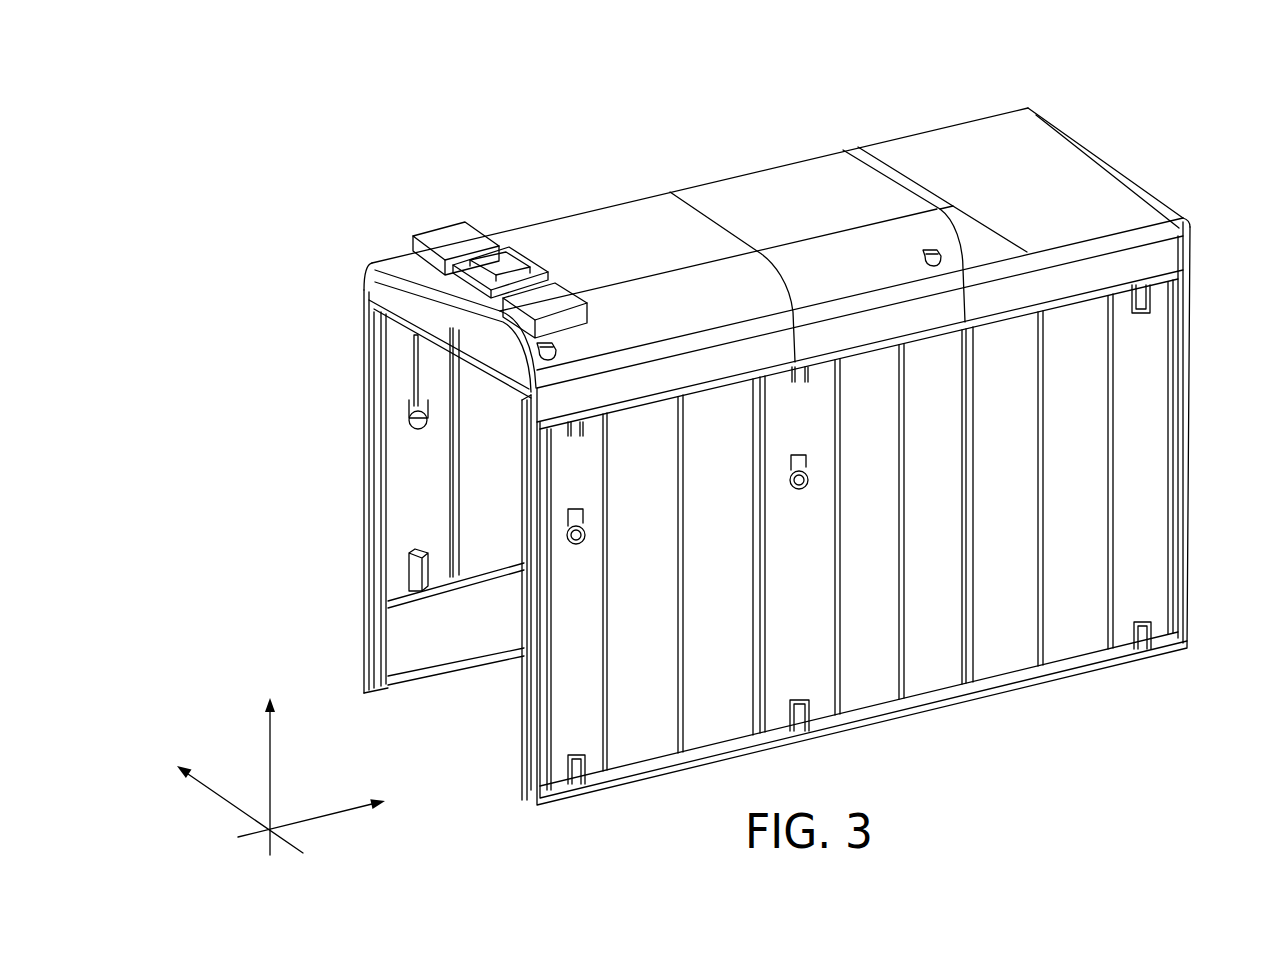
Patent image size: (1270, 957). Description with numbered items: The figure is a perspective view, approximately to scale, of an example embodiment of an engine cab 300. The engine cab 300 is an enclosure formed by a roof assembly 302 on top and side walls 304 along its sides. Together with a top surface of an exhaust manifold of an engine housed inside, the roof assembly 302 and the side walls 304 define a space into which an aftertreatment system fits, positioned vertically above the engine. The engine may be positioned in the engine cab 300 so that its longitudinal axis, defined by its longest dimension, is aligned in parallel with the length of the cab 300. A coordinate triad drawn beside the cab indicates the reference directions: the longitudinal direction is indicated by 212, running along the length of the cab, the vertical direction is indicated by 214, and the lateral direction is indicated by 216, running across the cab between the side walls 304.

The engine cab 300 is at (857, 88).
The roof assembly 302 is at (632, 223).
The side walls 304 is at (419, 488).
The longitudinal direction 212 is at (317, 818).
The vertical direction 214 is at (253, 776).
The lateral direction 216 is at (234, 809).